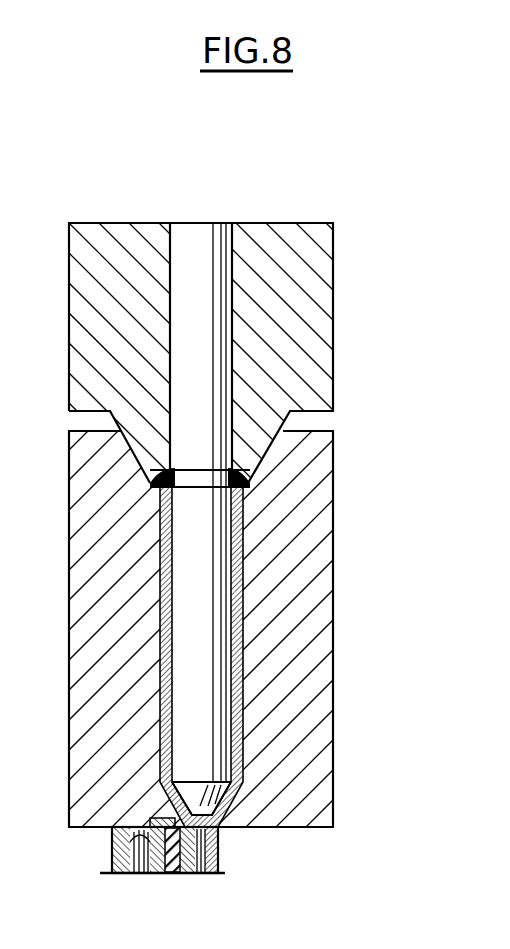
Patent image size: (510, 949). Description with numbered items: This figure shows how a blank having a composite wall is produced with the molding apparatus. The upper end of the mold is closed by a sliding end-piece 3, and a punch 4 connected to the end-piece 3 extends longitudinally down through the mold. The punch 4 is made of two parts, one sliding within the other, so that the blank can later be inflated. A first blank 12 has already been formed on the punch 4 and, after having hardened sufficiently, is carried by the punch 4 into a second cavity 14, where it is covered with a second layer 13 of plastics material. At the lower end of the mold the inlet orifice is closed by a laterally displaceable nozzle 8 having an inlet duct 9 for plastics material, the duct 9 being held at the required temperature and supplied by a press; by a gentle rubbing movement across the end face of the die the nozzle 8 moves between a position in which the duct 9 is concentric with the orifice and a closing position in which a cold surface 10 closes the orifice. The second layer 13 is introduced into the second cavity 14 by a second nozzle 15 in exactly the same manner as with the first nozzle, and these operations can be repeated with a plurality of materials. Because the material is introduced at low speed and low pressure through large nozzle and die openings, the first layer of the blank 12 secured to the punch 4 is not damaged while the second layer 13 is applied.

The sliding end-piece 3 is at (303, 386).
The punch 4 is at (202, 648).
The laterally displaceable nozzle 8 is at (167, 870).
The inlet duct 9 is at (140, 848).
The cold surface 10 is at (112, 873).
The blank 12 is at (243, 583).
The second layer 13 is at (243, 764).
The second cavity 14 is at (285, 690).
The second nozzle 15 is at (218, 860).